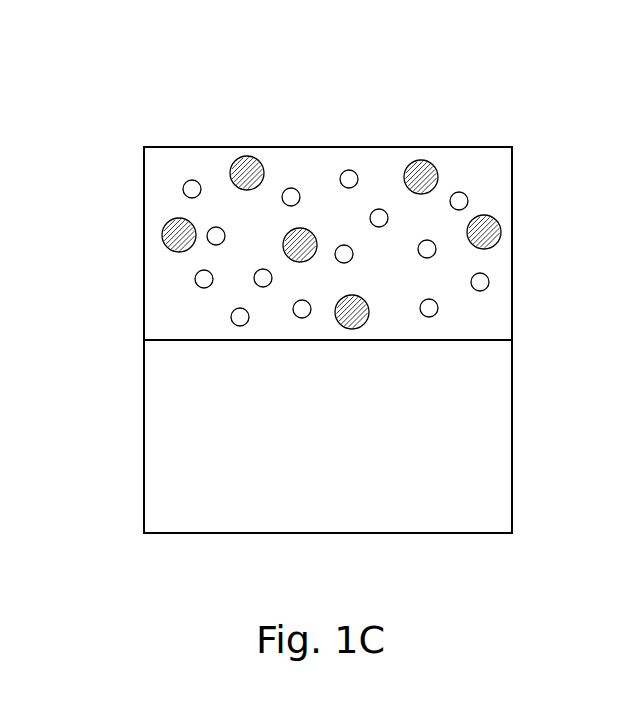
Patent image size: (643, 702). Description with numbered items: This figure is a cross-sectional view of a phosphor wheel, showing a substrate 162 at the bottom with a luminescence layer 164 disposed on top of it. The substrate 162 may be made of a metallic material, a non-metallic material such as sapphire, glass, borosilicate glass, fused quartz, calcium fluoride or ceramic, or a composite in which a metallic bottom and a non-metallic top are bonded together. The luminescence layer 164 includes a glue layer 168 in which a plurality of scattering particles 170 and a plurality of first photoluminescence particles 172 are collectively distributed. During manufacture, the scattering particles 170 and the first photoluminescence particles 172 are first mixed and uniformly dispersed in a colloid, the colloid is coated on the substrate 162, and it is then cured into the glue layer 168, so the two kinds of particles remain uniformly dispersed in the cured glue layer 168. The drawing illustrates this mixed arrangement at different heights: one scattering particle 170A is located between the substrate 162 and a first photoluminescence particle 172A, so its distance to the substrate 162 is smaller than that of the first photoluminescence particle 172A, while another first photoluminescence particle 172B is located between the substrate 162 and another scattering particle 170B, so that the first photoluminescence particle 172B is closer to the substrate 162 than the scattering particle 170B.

The substrate 162 is at (126, 344).
The luminescence layer 164 is at (127, 147).
The glue layer 168 is at (162, 167).
The scattering particles 170 is at (191, 180).
The first photoluminescence particles 172 is at (257, 157).
The scattering particle 170A is at (487, 276).
The scattering particle 170B is at (353, 253).
The first photoluminescence particle 172A is at (497, 220).
The first photoluminescence particle 172B is at (369, 312).